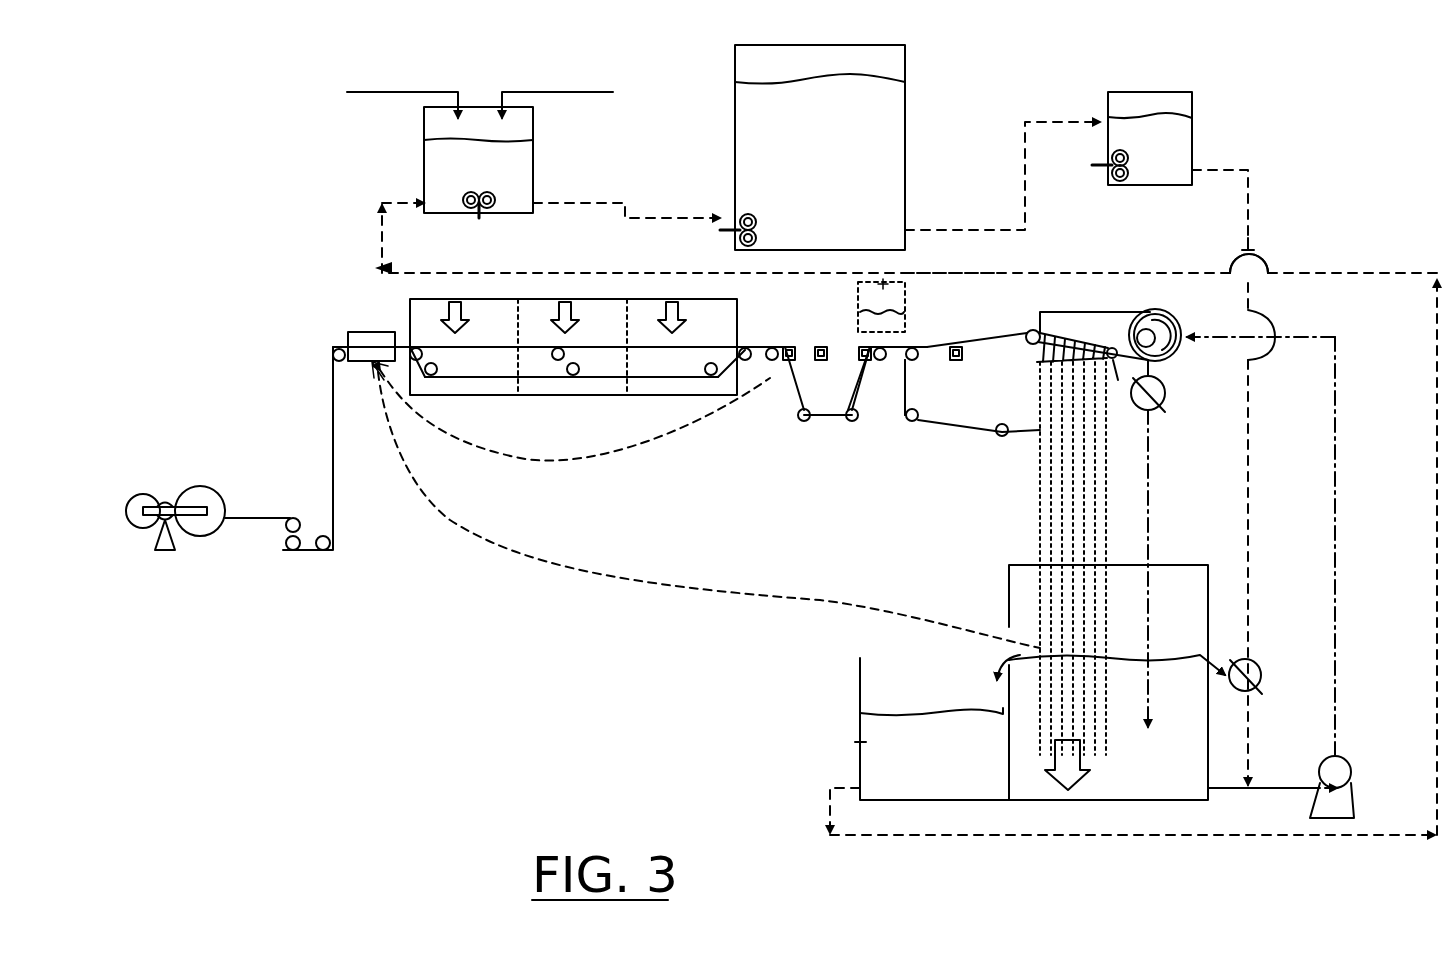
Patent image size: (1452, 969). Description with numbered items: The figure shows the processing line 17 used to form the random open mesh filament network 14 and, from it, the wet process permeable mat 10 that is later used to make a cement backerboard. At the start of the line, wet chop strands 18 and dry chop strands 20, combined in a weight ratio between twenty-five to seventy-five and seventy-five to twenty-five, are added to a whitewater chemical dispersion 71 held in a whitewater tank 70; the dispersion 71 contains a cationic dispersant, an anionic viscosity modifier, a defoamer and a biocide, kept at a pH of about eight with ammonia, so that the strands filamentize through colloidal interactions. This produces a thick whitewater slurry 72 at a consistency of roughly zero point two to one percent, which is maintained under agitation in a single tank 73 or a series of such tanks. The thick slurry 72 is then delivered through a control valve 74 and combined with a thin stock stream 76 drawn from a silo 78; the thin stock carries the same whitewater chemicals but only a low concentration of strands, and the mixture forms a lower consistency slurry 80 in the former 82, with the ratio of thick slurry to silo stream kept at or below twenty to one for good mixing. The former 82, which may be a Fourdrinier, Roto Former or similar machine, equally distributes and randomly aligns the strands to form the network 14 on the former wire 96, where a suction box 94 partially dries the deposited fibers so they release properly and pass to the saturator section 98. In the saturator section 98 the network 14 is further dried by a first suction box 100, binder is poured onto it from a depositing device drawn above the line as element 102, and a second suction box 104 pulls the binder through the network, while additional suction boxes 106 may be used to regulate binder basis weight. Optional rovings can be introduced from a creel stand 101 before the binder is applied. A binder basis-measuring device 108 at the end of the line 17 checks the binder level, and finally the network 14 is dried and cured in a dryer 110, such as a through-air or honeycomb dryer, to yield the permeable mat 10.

The wet process permeable mat 10 is at (333, 422).
The random open mesh filament network 14 is at (897, 348).
The processing line 17 is at (508, 697).
The wet chop strands 18 is at (402, 89).
The dry chop strands 20 is at (499, 89).
The whitewater tank 70 is at (533, 130).
The whitewater chemical dispersion 71 is at (424, 163).
The thick whitewater slurry 72 is at (1252, 495).
The tank 73 is at (905, 66).
The control valve 74 is at (1263, 665).
The thin stock stream 76 is at (1225, 790).
The silo 78 is at (1120, 790).
The lower consistency slurry 80 is at (1337, 525).
The former 82 is at (980, 415).
The suction box 94 is at (870, 362).
The former wire 96 is at (925, 428).
The saturator section 98 is at (830, 420).
The first suction box 100 is at (957, 360).
The creel stand 101 is at (912, 270).
The controller 102 is at (858, 318).
The second suction box 104 is at (790, 360).
The additional suction boxes 106 is at (783, 368).
The binder basis-measuring device 108 is at (362, 332).
The dryer 110 is at (582, 390).